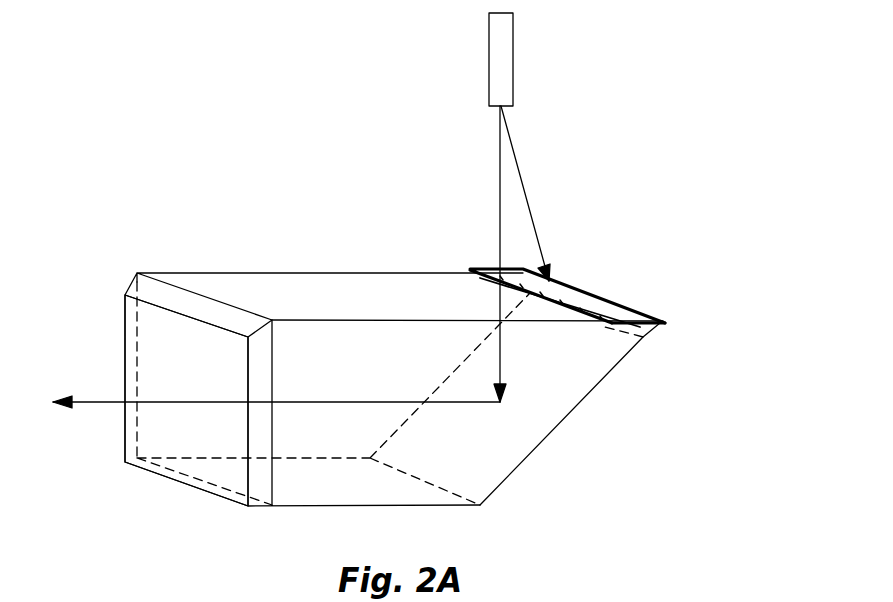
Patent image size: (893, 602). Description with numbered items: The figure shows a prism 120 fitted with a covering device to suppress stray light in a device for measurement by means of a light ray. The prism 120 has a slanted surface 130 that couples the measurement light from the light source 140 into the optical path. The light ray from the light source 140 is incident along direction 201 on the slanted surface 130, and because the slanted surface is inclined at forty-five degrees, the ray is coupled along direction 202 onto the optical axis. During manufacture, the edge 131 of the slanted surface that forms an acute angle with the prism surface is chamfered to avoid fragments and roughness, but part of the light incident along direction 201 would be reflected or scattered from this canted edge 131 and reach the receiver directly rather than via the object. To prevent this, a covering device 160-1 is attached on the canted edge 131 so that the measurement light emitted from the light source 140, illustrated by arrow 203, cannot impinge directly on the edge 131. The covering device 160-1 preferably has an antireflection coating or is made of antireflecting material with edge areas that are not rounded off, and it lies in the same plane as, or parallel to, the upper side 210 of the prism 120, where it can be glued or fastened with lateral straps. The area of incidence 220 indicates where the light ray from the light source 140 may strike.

The prism 120 is at (260, 273).
The upper side of prism 210 is at (346, 295).
The slanted surface 130 is at (541, 366).
The area of incidence of the light ray 220 is at (170, 357).
The light source 140 is at (513, 57).
The incidence direction 201 is at (500, 143).
The arrow illustrating measurement light 203 is at (533, 222).
The coupling direction 202 is at (98, 403).
The covering device 160-1 is at (607, 300).
The canted edge 131 is at (640, 333).